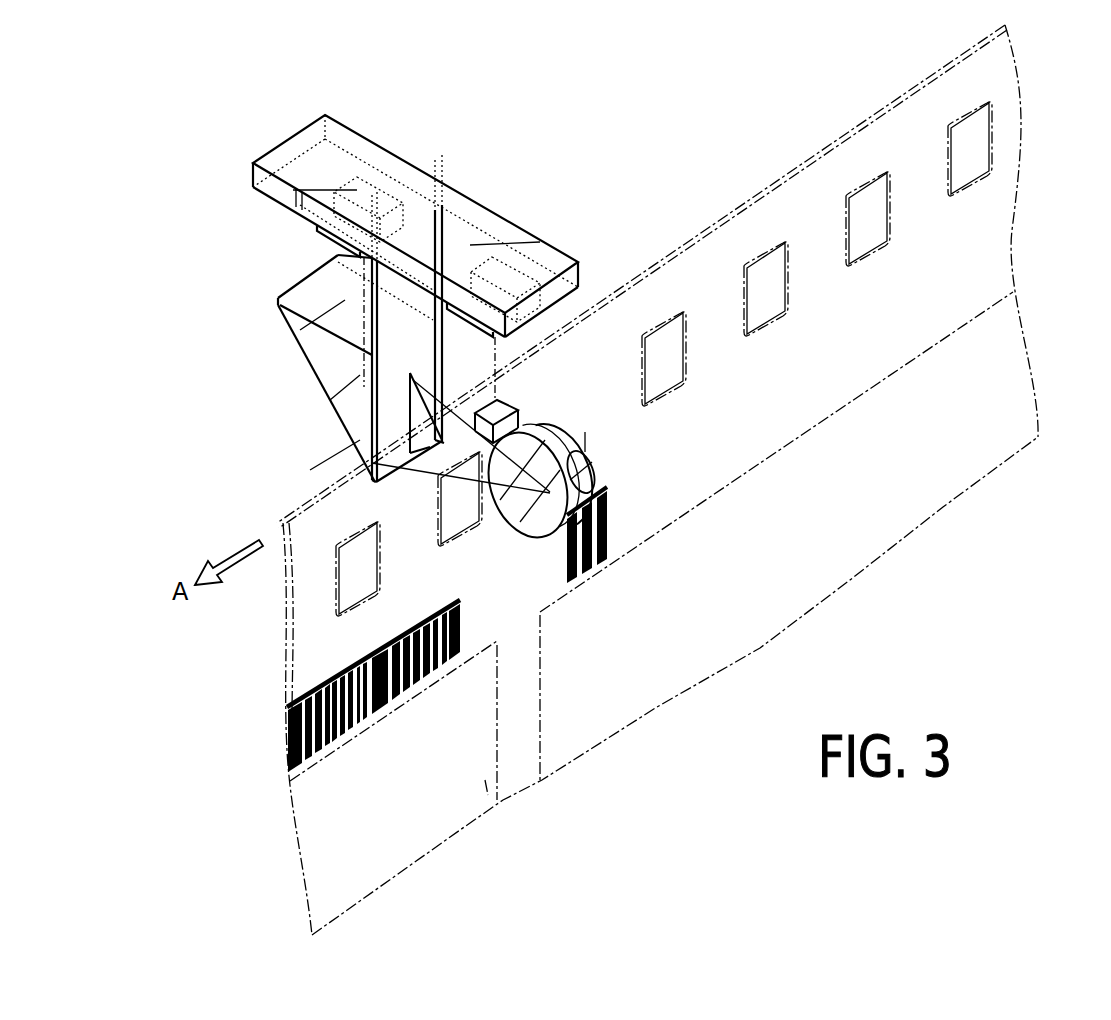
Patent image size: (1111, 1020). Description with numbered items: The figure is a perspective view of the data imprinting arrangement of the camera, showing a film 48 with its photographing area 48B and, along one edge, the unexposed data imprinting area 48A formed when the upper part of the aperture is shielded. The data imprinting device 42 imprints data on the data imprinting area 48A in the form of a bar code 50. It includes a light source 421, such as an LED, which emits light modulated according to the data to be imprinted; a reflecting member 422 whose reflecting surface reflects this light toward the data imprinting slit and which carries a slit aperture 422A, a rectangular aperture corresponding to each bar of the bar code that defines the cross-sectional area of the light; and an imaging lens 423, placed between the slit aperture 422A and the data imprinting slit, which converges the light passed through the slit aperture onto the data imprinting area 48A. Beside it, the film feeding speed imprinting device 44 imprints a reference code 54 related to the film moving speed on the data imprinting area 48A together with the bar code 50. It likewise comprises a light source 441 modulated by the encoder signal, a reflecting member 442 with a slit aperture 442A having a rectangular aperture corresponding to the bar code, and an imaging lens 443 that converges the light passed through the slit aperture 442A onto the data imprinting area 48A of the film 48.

The data imprinting device 42 is at (407, 352).
The light source 421 is at (413, 168).
The reflecting member 422 is at (335, 382).
The slit aperture 422A is at (445, 426).
The imaging lens 423 is at (523, 528).
The film feeding speed imprinting device 44 is at (556, 362).
The light source 441 is at (555, 250).
The reflecting member 442 is at (492, 420).
The slit aperture 442A is at (537, 430).
The imaging lens 443 is at (597, 465).
The film 48 is at (878, 110).
The data imprinting area 48A is at (1000, 268).
The photographing area 48B is at (557, 753).
The bar code 50 is at (462, 639).
The reference code 54 is at (340, 667).